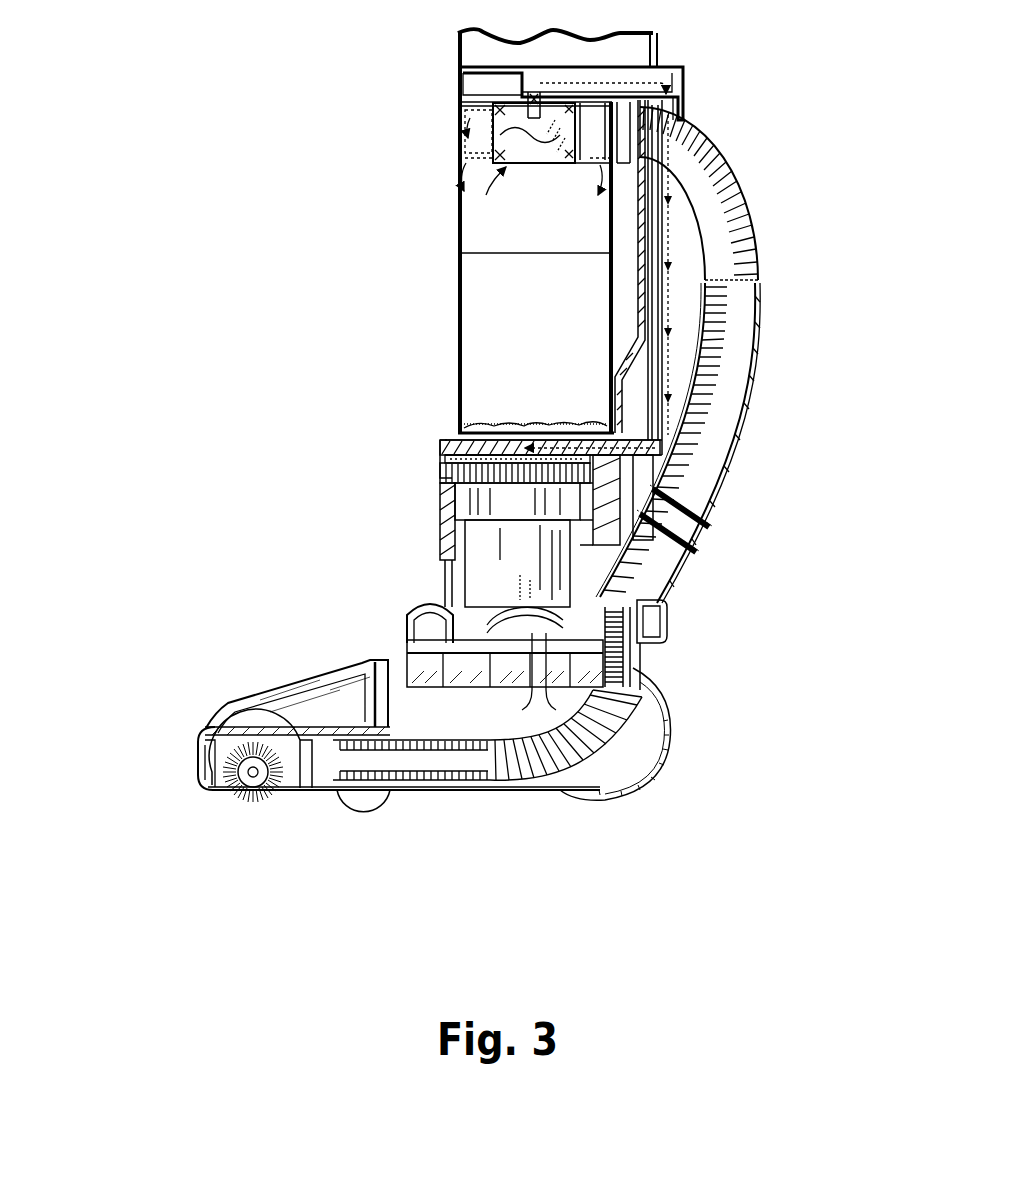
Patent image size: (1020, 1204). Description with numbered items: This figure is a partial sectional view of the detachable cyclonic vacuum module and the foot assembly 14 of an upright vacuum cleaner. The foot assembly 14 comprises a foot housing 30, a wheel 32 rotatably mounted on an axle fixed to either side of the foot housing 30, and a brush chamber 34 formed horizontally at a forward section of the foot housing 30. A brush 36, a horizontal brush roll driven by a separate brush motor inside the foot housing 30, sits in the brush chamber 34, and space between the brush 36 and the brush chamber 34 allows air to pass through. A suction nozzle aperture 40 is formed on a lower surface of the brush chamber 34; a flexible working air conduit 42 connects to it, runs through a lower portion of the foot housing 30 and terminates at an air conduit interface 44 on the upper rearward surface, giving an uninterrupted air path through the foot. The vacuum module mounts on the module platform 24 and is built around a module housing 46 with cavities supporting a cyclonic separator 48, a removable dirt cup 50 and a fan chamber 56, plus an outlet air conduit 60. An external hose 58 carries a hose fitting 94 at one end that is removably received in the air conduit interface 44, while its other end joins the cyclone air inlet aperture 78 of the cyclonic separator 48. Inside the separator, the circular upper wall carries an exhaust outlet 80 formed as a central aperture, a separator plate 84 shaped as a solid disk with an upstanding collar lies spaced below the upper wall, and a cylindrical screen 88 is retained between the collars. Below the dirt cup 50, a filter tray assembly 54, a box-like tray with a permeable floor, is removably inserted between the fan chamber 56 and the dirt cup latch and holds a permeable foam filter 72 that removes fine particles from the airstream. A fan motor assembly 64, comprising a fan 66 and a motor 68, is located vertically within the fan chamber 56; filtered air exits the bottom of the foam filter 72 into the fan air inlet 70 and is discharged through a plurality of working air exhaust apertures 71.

The foot assembly 14 is at (208, 725).
The module platform 24 is at (404, 648).
The foot housing 30 is at (300, 715).
The wheel 32 is at (618, 796).
The brush chamber 34 is at (222, 752).
The brush 36 is at (226, 797).
The suction nozzle aperture 40 is at (292, 792).
The flexible working air conduit 42 is at (430, 768).
The air conduit interface 44 is at (668, 606).
The module housing 46 is at (665, 48).
The cyclonic separator 48 is at (452, 241).
The removable dirt cup 50 is at (452, 328).
The filter tray assembly 54 is at (440, 473).
The fan chamber 56 is at (453, 525).
The external hose 58 is at (758, 250).
The outlet air conduit 60 is at (683, 78).
The fan motor assembly 64 is at (447, 553).
The fan 66 is at (440, 503).
The motor 68 is at (470, 578).
The fan air inlet 70 is at (443, 480).
The working air exhaust apertures 71 is at (445, 563).
The permeable foam filter 72 is at (440, 470).
The cyclone air inlet aperture 78 is at (460, 117).
The exhaust outlet 80 is at (525, 93).
The separator plate 84 is at (458, 192).
The cylindrical screen 88 is at (492, 108).
The hose fitting 94 is at (690, 558).